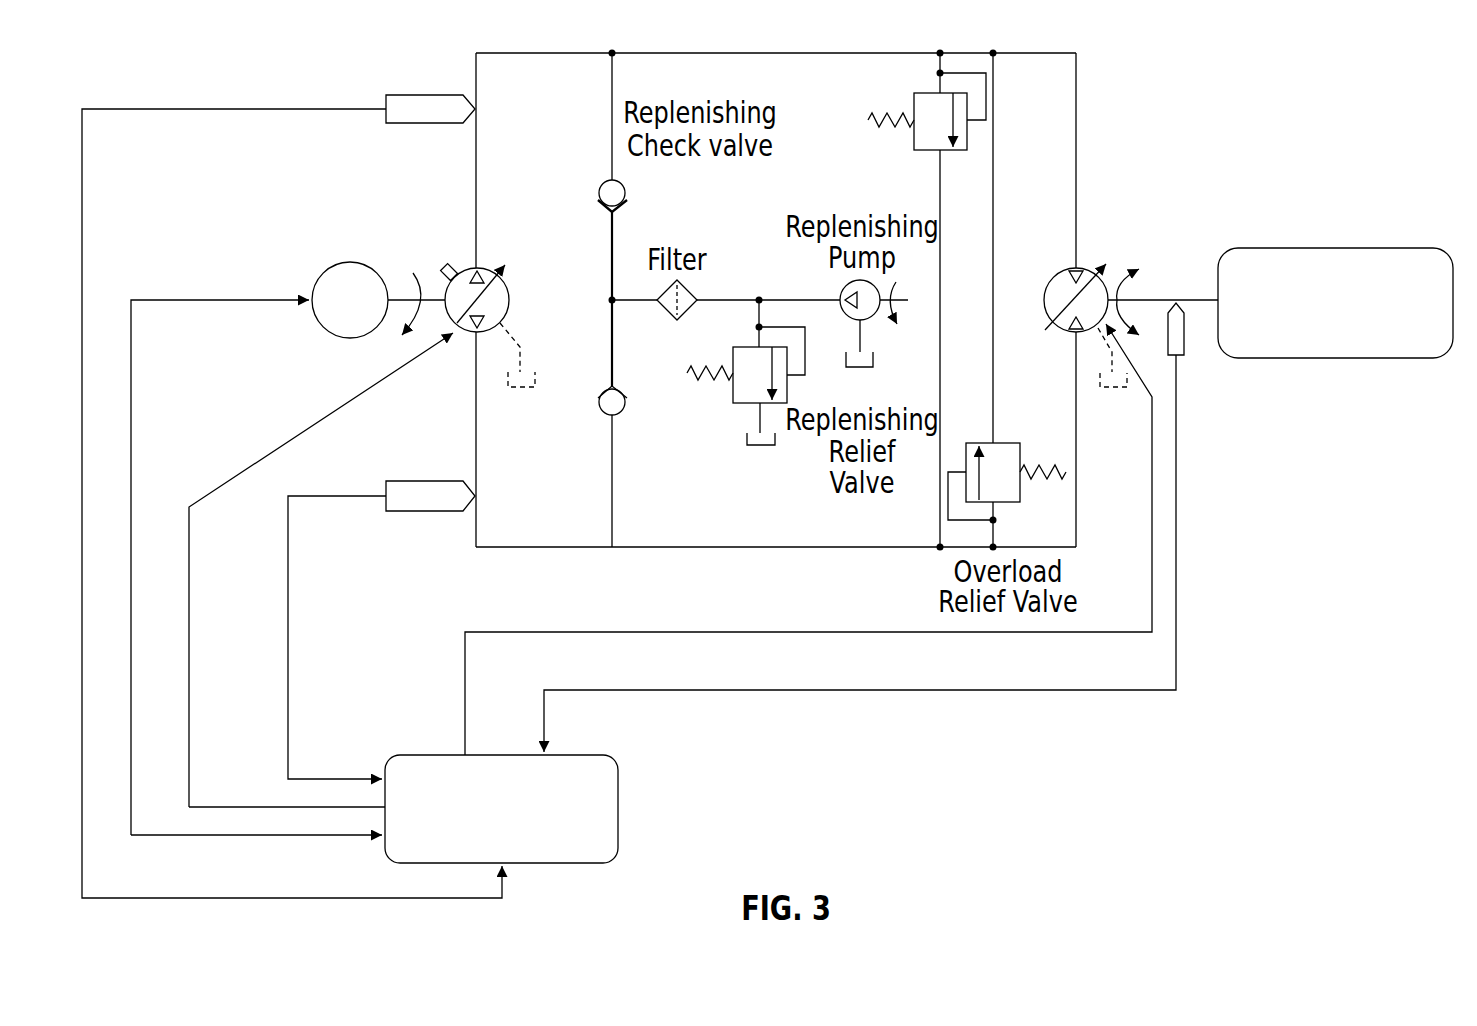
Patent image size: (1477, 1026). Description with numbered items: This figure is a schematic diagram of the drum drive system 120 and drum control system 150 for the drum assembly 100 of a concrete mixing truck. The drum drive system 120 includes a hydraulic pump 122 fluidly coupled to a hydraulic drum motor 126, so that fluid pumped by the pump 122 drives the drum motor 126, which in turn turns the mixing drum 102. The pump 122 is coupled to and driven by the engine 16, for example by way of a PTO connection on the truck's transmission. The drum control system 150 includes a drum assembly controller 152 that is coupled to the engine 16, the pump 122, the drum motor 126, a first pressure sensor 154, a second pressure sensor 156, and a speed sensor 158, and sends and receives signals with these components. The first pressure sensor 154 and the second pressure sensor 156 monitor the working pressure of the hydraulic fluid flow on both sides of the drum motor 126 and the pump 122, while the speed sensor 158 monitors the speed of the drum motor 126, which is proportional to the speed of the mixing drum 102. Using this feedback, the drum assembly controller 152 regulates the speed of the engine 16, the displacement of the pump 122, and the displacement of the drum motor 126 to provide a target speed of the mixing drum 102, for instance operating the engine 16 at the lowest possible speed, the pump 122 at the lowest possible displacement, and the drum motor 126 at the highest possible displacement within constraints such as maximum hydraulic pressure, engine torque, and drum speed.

The drum assembly 100 is at (1309, 88).
The mixing drum 102 is at (1380, 257).
The engine 16 is at (330, 282).
The drum drive system 120 is at (873, 50).
The pump 122 is at (495, 300).
The drum motor 126 is at (1050, 293).
The drum control system 150 is at (609, 730).
The drum assembly controller 152 is at (455, 758).
The first pressure sensor 154 is at (421, 128).
The second pressure sensor 156 is at (428, 485).
The speed sensor 158 is at (1177, 305).